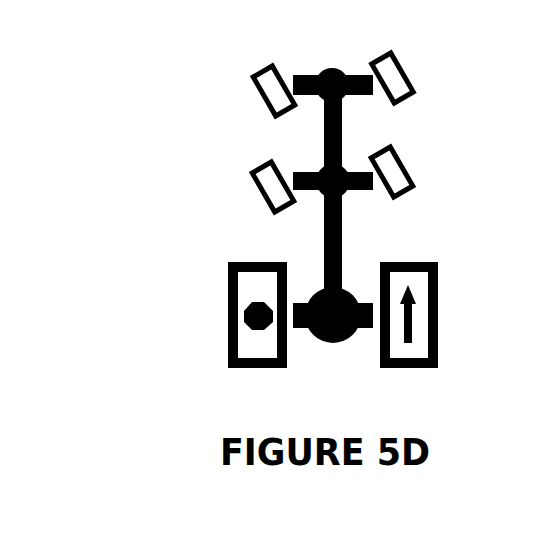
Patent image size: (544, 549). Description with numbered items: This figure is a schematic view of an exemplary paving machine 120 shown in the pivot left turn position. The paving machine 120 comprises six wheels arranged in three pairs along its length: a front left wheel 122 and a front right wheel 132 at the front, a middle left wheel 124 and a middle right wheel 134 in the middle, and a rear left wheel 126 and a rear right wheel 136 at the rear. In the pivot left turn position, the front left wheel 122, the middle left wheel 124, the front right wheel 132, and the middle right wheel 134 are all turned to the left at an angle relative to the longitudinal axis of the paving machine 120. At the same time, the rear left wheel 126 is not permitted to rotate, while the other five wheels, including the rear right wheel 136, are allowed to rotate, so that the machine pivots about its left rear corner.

The paving machine 120 is at (321, 226).
The front left wheel 122 is at (262, 99).
The middle left wheel 124 is at (259, 196).
The rear left wheel 126 is at (228, 318).
The front right wheel 132 is at (415, 82).
The middle right wheel 134 is at (415, 163).
The rear right wheel 136 is at (438, 317).